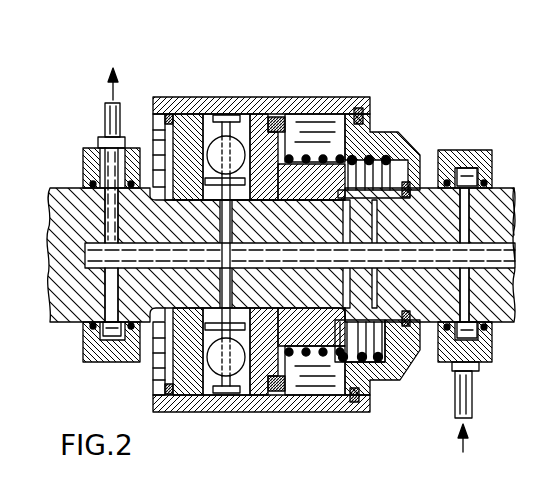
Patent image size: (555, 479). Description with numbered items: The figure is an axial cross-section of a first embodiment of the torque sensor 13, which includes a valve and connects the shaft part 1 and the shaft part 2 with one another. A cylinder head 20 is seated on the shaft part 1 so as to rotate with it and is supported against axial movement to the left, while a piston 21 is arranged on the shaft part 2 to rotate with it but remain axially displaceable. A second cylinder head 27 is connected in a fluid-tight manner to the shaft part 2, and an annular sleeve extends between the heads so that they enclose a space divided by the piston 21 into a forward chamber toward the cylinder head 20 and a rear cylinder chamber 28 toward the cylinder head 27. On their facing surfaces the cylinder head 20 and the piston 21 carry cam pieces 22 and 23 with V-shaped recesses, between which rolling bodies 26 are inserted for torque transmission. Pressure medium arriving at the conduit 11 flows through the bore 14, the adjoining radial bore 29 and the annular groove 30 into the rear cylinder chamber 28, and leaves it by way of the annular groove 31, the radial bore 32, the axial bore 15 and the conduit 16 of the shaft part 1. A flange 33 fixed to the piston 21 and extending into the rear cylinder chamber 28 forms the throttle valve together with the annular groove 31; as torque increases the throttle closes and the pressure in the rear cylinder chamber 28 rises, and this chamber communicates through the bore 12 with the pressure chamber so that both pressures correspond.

The shaft part 1 is at (68, 296).
The shaft part 2 is at (506, 186).
The conduit 11 is at (472, 404).
The bore 12 is at (484, 250).
The torque sensor 13 is at (271, 119).
The bore 14 is at (295, 356).
The axial bore 15 is at (150, 328).
The conduit 16 is at (108, 118).
The cylinder head 20 is at (187, 130).
The piston 21 is at (268, 142).
The cam piece 22 is at (217, 130).
The cam piece 23 is at (247, 130).
The rolling bodies 26 is at (214, 368).
The cylinder head 27 is at (384, 142).
The rear cylinder chamber 28 is at (318, 130).
The radial bore 29 is at (383, 358).
The annular groove 30 is at (388, 172).
The annular groove 31 is at (367, 396).
The radial bore 32 is at (327, 324).
The flange 33 is at (302, 340).